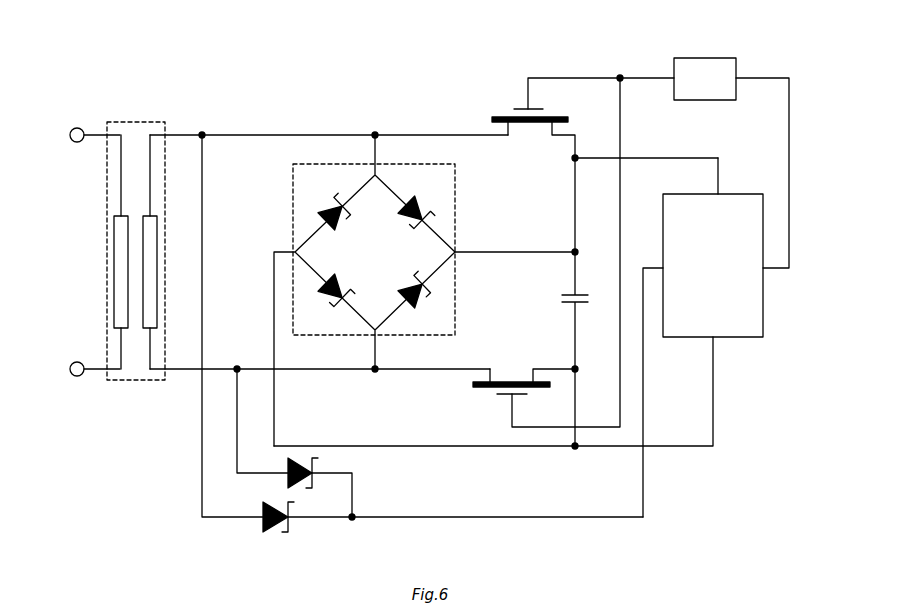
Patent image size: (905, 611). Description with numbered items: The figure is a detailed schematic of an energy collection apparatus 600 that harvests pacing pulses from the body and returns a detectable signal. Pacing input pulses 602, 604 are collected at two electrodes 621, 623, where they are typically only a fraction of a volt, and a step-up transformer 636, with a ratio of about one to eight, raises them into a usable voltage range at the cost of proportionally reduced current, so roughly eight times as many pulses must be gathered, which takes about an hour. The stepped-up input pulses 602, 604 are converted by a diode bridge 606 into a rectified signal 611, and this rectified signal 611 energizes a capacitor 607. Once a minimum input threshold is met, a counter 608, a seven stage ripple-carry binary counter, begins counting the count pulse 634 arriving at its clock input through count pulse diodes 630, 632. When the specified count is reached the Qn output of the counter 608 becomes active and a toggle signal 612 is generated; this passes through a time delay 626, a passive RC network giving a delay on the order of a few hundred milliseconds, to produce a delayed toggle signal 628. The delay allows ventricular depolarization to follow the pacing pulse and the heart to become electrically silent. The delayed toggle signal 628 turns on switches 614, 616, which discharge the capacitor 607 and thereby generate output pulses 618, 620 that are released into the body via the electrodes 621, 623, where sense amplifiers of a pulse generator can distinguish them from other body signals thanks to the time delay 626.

The apparatus 600 is at (104, 34).
The input pulse 602 is at (174, 133).
The input pulse 604 is at (178, 372).
The diode bridge 606 is at (292, 182).
The capacitor 607 is at (569, 294).
The counter 608 is at (747, 339).
The rectified signal 611 is at (525, 251).
The toggle signal 612 is at (788, 127).
The switch 614 is at (531, 126).
The switch 616 is at (510, 380).
The output pulse 618 is at (453, 133).
The output pulse 620 is at (423, 372).
The electrode 621 is at (77, 128).
The electrode 623 is at (77, 376).
The time delay 626 is at (706, 57).
The delayed toggle signal 628 is at (566, 76).
The count pulse diode 630 is at (318, 473).
The count pulse diode 632 is at (258, 522).
The count pulse 634 is at (712, 416).
The transformer 636 is at (106, 182).